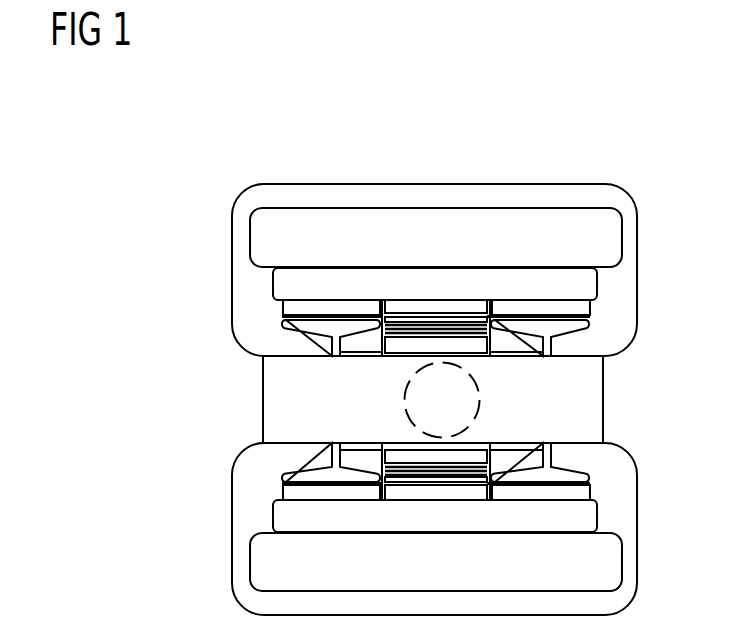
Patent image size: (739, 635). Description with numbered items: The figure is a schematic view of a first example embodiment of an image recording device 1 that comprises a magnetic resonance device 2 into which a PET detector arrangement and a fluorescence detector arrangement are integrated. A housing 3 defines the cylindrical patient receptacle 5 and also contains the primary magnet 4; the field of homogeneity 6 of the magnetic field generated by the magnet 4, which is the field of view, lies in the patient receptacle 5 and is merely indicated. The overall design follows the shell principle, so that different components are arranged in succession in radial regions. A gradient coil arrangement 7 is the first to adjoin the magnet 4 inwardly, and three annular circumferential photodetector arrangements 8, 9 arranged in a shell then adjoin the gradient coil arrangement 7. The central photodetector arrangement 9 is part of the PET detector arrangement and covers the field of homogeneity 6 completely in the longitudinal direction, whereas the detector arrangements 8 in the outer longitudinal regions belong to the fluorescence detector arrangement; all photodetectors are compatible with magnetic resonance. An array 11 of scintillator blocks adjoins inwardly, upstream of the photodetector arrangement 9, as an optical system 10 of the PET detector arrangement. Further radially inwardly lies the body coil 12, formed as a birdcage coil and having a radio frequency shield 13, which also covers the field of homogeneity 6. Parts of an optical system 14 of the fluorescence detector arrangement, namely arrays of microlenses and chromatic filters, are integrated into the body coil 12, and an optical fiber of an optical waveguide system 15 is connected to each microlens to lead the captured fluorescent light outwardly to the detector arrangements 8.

The image recording device 1 is at (255, 143).
The magnetic resonance device 2 is at (250, 327).
The housing 3 is at (232, 218).
The primary magnet 4 is at (315, 218).
The patient receptacle 5 is at (258, 407).
The field of homogeneity 6 is at (470, 421).
The gradient coil arrangement 7 is at (277, 290).
The photodetector arrangements 8 is at (333, 304).
The central photodetector arrangement 9 is at (420, 305).
The optical system 10 is at (492, 333).
The array of scintillator blocks 11 is at (469, 322).
The body coil 12 is at (402, 344).
The radio frequency shield 13 is at (378, 336).
The optical system 14 is at (466, 350).
The optical waveguide system 15 is at (315, 323).